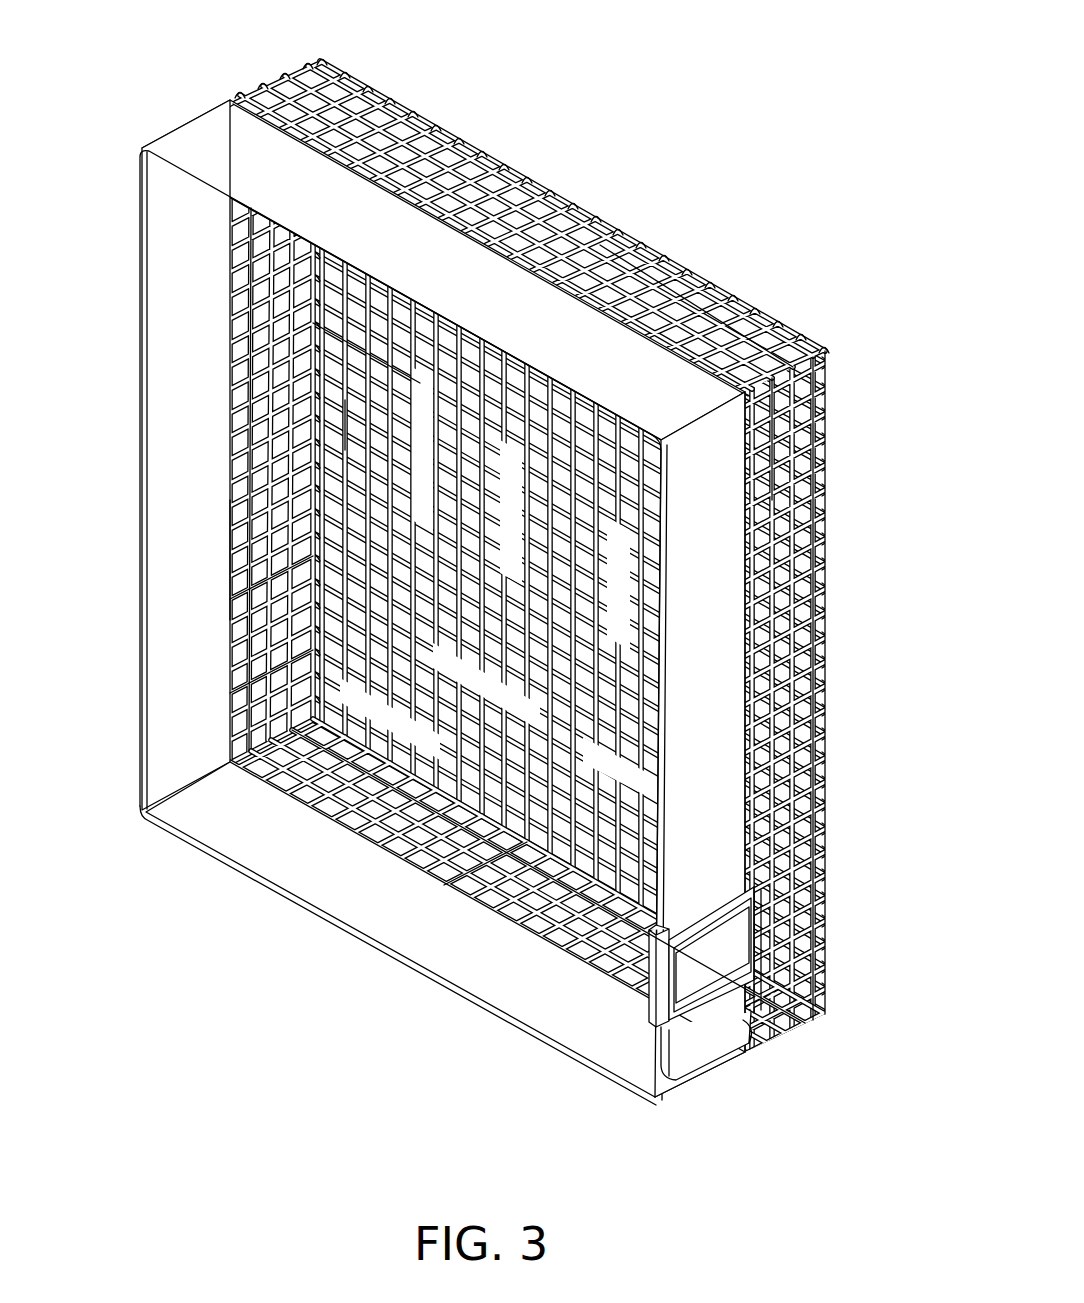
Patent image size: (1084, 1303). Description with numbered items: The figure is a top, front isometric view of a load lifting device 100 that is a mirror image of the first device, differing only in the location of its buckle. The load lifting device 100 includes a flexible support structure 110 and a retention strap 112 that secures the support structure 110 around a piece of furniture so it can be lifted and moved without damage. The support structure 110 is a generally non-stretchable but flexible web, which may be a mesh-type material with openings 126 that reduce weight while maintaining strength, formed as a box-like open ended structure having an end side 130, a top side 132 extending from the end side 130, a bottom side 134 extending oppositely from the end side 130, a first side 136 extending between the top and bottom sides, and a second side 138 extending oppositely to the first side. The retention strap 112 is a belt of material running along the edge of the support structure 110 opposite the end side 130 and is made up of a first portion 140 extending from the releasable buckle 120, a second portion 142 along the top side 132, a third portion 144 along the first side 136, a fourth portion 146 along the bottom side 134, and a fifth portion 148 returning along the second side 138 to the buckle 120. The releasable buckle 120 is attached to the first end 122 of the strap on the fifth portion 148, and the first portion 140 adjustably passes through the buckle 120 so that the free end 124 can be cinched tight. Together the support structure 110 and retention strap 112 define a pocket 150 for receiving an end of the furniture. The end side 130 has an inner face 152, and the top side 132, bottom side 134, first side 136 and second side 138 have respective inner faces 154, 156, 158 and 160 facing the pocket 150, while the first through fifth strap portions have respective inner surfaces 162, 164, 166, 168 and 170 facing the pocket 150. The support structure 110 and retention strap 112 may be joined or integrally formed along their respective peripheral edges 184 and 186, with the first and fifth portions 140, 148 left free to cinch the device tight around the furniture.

The load lifting device 100 is at (145, 44).
The support structure 110 is at (458, 113).
The retention strap 112 is at (176, 106).
The releasable buckle 120 is at (856, 910).
The first end 122 is at (649, 1030).
The free end 124 is at (708, 1038).
The openings 126 is at (350, 940).
The end side 130 is at (322, 492).
The top side 132 is at (700, 318).
The bottom side 134 is at (450, 950).
The first side 136 is at (244, 302).
The second side 138 is at (808, 711).
The first portion 140 is at (712, 677).
The second portion 142 is at (445, 265).
The third portion 144 is at (142, 260).
The fourth portion 146 is at (292, 906).
The fifth portion 148 is at (674, 1084).
The pocket 150 is at (276, 689).
The inner face 152 is at (335, 340).
The inner face 154 is at (777, 366).
The inner face 156 is at (520, 980).
The inner face 158 is at (350, 426).
The inner face 160 is at (812, 562).
The inner surface 162 is at (790, 613).
The inner surface 164 is at (455, 350).
The inner surface 166 is at (182, 240).
The inner surface 168 is at (245, 828).
The inner surface 170 is at (690, 1088).
The peripheral edge 184 is at (250, 585).
The peripheral edge 186 is at (238, 550).